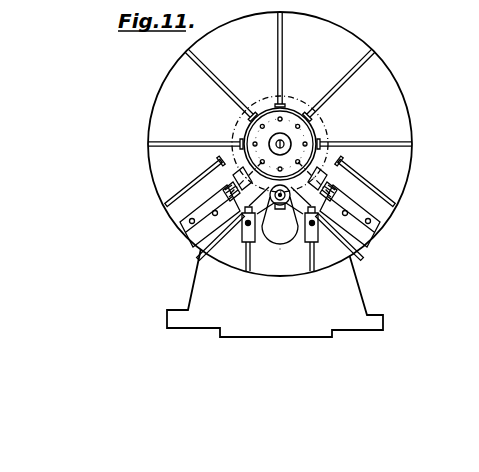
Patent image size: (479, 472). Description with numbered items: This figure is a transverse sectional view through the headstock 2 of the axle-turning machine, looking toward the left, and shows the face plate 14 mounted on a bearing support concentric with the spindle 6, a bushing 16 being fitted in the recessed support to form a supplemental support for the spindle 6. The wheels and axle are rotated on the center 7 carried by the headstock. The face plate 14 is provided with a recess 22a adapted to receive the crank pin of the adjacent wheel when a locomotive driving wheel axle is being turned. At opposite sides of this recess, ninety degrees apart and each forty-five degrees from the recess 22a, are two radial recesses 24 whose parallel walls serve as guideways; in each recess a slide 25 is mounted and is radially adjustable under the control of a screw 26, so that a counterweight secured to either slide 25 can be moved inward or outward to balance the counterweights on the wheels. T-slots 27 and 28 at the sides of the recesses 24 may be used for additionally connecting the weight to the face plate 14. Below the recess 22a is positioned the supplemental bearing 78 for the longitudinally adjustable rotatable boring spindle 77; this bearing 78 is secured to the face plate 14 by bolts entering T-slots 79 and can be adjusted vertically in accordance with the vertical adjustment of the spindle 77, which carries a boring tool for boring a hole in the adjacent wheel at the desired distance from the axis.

The headstock 2 is at (360, 289).
The spindle 6 is at (282, 141).
The center 7 is at (295, 140).
The face plate 14 is at (388, 88).
The bushing 16 is at (247, 124).
The radial recess 24 is at (212, 200).
The slide 25 is at (190, 212).
The screw 26 is at (232, 172).
The T-slot 27 is at (212, 258).
The T-slot 28 is at (372, 195).
The spindle 77 is at (277, 210).
The supplemental bearing 78 is at (288, 205).
The T-slot 79 is at (248, 264).
The recess 22a is at (282, 250).